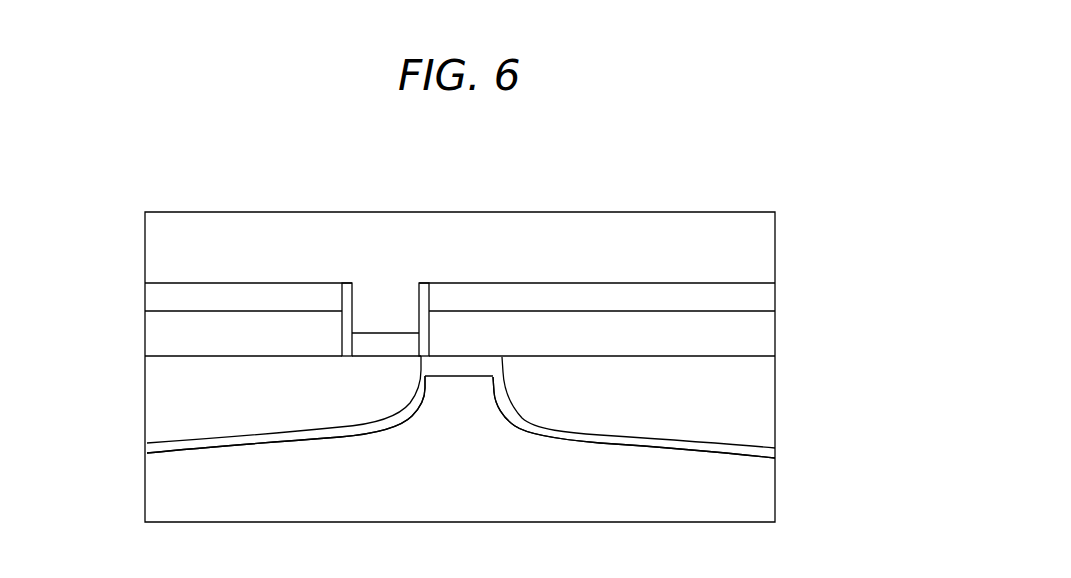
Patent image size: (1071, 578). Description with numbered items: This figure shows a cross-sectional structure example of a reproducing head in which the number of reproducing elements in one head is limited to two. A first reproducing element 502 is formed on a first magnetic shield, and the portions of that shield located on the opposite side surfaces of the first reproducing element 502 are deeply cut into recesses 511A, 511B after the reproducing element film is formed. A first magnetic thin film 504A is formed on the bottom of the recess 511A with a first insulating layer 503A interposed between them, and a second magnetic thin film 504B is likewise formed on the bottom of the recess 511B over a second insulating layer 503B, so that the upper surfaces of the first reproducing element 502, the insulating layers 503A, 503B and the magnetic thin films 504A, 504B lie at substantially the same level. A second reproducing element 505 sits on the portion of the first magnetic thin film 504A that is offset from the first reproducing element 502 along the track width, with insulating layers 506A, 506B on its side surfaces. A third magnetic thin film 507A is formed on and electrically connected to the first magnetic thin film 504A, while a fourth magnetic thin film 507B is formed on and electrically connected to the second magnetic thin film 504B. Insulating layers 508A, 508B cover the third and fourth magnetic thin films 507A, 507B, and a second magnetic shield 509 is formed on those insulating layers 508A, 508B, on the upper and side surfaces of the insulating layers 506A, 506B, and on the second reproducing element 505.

The first reproducing element 502 is at (463, 375).
The first insulating layer 503A is at (145, 452).
The second insulating layer 503B is at (775, 453).
The first magnetic thin film 504A is at (145, 396).
The second magnetic thin film 504B is at (775, 398).
The second reproducing element 505 is at (383, 340).
The insulating layer 506A is at (342, 328).
The insulating layer 506B is at (427, 332).
The third magnetic thin film 507A is at (145, 331).
The fourth magnetic thin film 507B is at (775, 340).
The insulating layer 508A is at (145, 295).
The insulating layer 508B is at (775, 303).
The second magnetic shield 509 is at (775, 253).
The recess 511A is at (257, 443).
The recess 511B is at (623, 447).